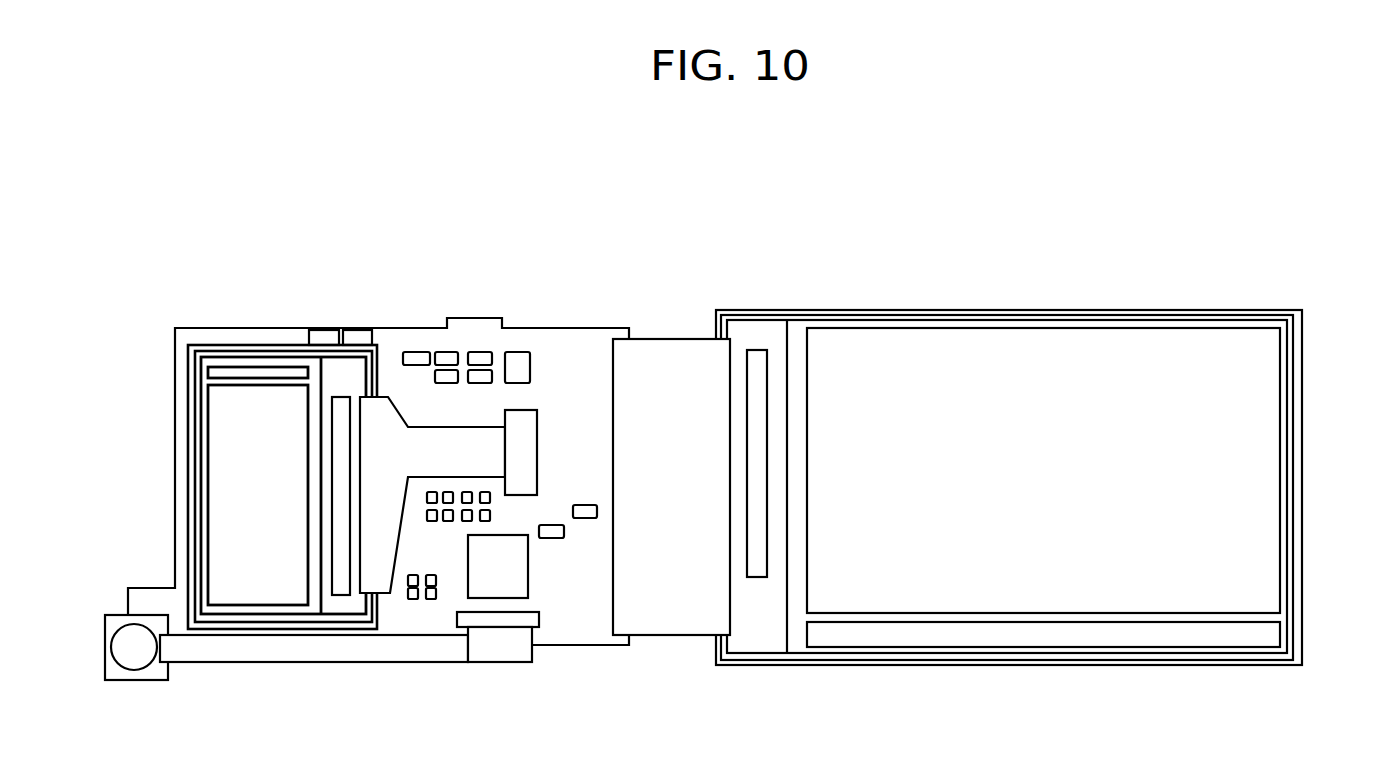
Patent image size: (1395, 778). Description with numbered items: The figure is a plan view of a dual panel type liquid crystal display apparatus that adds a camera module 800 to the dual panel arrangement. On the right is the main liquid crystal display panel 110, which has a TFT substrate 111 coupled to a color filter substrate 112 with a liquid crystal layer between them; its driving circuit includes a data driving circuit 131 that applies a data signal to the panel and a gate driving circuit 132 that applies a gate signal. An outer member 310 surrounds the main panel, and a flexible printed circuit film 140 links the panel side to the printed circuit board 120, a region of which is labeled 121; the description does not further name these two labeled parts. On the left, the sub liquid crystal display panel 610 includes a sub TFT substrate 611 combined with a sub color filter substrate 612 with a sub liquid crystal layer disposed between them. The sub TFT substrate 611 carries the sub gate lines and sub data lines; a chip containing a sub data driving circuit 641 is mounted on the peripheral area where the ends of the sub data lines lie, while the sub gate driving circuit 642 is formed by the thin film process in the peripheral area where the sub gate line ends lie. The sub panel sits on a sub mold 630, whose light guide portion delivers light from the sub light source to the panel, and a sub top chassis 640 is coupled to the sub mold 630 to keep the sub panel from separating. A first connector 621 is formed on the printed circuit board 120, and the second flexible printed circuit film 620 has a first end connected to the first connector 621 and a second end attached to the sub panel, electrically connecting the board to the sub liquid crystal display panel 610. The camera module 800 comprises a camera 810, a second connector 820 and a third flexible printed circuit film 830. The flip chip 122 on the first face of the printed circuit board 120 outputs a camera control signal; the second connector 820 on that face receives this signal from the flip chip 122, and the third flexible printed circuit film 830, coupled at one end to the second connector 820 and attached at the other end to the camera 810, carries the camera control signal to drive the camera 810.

The liquid crystal display panel 110 is at (1016, 454).
The TFT substrate 111 is at (760, 330).
The color filter substrate 112 is at (800, 328).
The printed circuit board 120 is at (378, 541).
The base film 121 is at (600, 630).
The flip chip 122 is at (523, 573).
The data driving circuit 131 is at (746, 400).
The gate driving circuit 132 is at (1050, 647).
The flexible printed circuit film 140 is at (668, 340).
The cover window 310 is at (1297, 339).
The sub liquid crystal display panel 610 is at (282, 439).
The sub TFT substrate 611 is at (327, 370).
The sub color filter substrate 612 is at (252, 362).
The second flexible printed circuit film 620 is at (470, 437).
The first connector 621 is at (537, 440).
The sub mold 630 is at (363, 345).
The sub top chassis 640 is at (197, 483).
The sub data driving circuit 641 is at (338, 425).
The sub gate driving circuit 642 is at (212, 372).
The camera module 800 is at (322, 688).
The camera 810 is at (145, 660).
The second connector 820 is at (498, 665).
The third flexible printed circuit film 830 is at (320, 662).